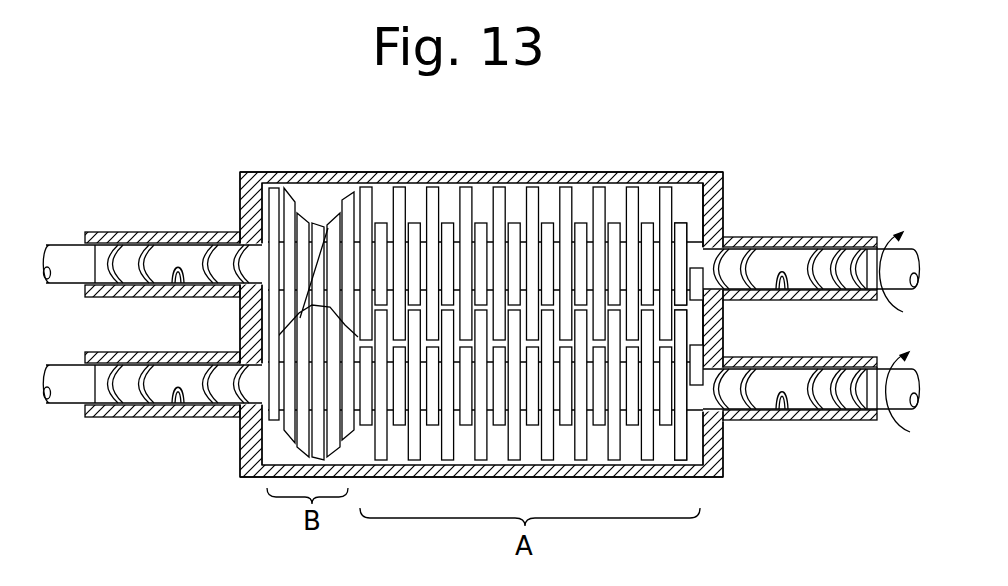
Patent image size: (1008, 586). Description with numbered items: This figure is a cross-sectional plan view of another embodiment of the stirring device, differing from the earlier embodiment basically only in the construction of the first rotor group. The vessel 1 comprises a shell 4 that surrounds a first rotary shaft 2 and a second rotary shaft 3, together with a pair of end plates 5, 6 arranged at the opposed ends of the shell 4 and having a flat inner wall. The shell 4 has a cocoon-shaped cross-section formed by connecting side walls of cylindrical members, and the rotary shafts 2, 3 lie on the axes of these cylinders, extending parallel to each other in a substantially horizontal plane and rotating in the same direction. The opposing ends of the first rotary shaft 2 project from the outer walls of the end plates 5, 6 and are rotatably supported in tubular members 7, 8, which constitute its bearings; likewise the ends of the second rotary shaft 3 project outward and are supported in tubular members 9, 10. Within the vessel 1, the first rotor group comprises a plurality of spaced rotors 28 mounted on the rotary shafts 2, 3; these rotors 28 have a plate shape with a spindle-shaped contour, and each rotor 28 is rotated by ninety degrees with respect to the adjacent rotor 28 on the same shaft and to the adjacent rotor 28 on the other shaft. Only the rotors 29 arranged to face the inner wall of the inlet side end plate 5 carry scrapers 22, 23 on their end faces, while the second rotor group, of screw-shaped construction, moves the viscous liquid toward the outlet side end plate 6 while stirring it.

The vessel 1 is at (677, 171).
The first rotary shaft 2 is at (908, 247).
The second rotary shaft 3 is at (912, 367).
The shell 4 is at (290, 172).
The inlet side end plate 5 is at (725, 184).
The outlet side end plate 6 is at (250, 200).
The tubular member 7 is at (797, 238).
The tubular member 8 is at (173, 232).
The tubular member 9 is at (803, 421).
The tubular member 10 is at (158, 418).
The scraper 22 is at (717, 312).
The scraper 23 is at (719, 222).
The rotor 28 is at (617, 228).
The rotor 29 is at (681, 228).